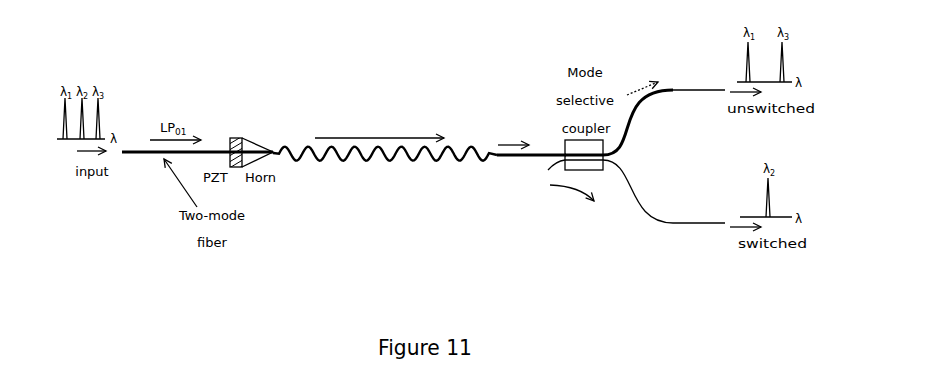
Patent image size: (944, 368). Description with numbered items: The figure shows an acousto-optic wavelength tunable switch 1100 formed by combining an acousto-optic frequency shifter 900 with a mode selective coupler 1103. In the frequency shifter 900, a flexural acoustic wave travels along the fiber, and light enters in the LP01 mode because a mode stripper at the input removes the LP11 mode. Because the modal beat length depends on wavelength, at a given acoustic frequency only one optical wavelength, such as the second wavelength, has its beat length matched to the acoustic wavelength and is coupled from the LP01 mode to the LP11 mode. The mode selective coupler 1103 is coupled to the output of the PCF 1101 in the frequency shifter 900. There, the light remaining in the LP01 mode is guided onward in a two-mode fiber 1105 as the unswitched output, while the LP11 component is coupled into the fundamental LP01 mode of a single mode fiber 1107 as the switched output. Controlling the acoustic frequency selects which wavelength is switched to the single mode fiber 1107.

The acousto-optic frequency shifter 900 is at (341, 92).
The acousto-optic wavelength tunable switch 1100 is at (406, 181).
The PCF 1101 is at (497, 158).
The mode selective coupler 1103 is at (592, 170).
The two-mode fiber 1105 is at (643, 95).
The single mode fiber 1107 is at (652, 224).